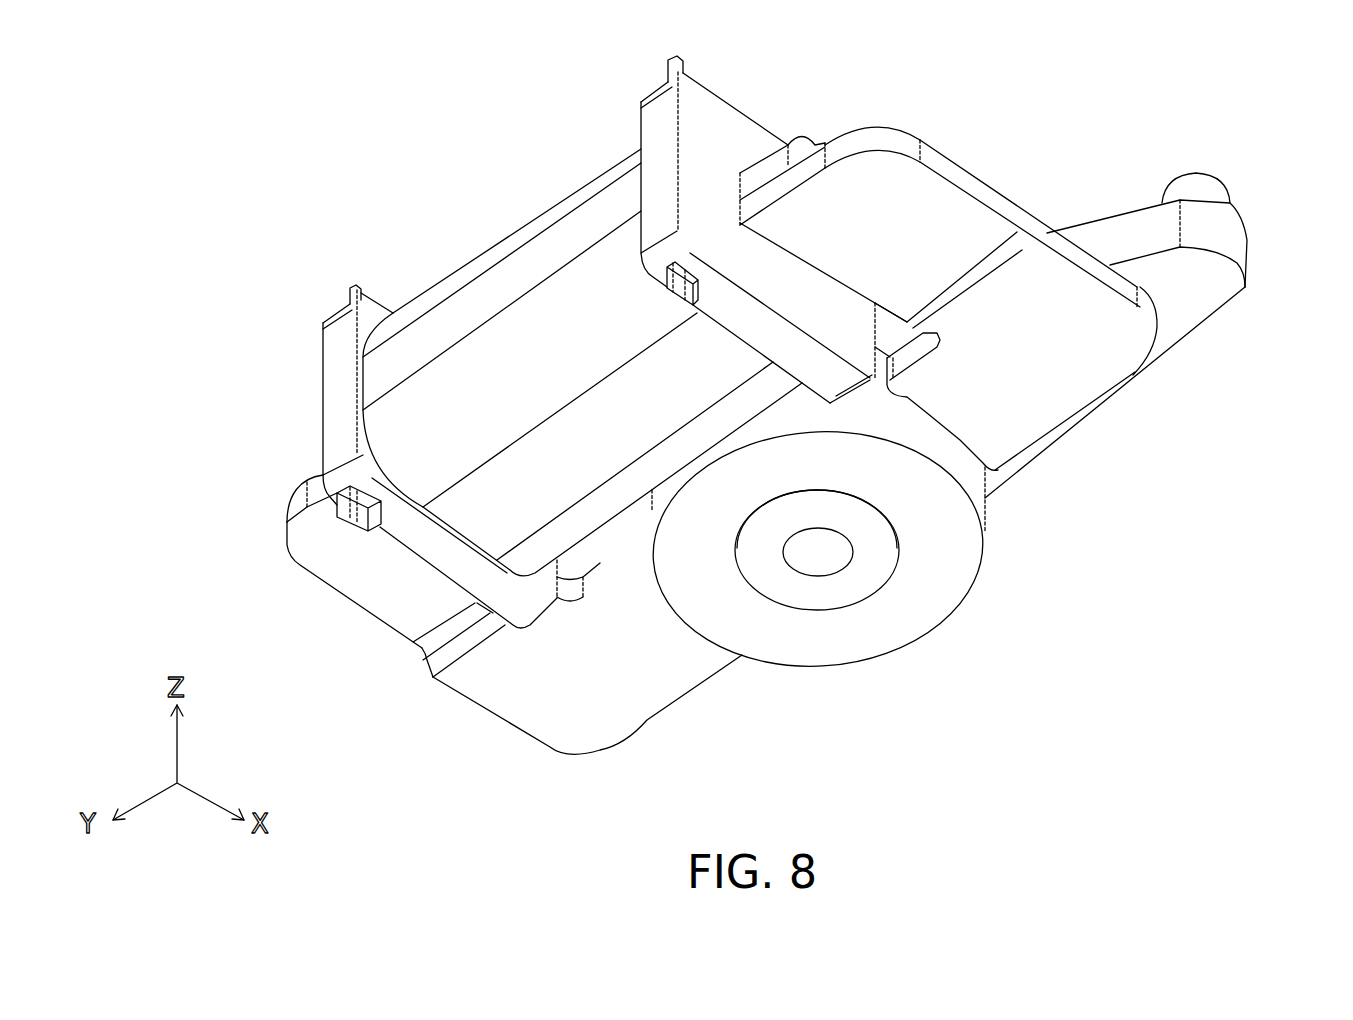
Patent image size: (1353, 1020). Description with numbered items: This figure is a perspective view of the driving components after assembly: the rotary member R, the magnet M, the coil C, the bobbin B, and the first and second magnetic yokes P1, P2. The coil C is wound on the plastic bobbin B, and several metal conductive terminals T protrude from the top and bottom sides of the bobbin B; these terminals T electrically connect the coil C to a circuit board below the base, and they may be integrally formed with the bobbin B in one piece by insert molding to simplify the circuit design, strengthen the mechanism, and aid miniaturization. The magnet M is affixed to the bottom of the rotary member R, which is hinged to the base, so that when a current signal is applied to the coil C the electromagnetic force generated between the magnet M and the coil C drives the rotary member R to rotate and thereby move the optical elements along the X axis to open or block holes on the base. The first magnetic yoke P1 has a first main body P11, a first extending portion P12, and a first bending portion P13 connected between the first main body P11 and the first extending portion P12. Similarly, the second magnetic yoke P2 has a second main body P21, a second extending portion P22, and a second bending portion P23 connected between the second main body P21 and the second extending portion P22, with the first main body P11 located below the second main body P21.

The conductive terminal T is at (685, 282).
The coil C is at (498, 282).
The first magnetic yoke P1 is at (1000, 303).
The first main body P11 is at (887, 175).
The first extending portion P12 is at (1133, 353).
The first bending portion P13 is at (1007, 258).
The rotary member R is at (1248, 247).
The second magnetic yoke P2 is at (477, 629).
The second main body P21 is at (310, 550).
The second extending portion P22 is at (553, 727).
The second bending portion P23 is at (430, 655).
The bobbin B is at (443, 553).
The magnet M is at (908, 620).